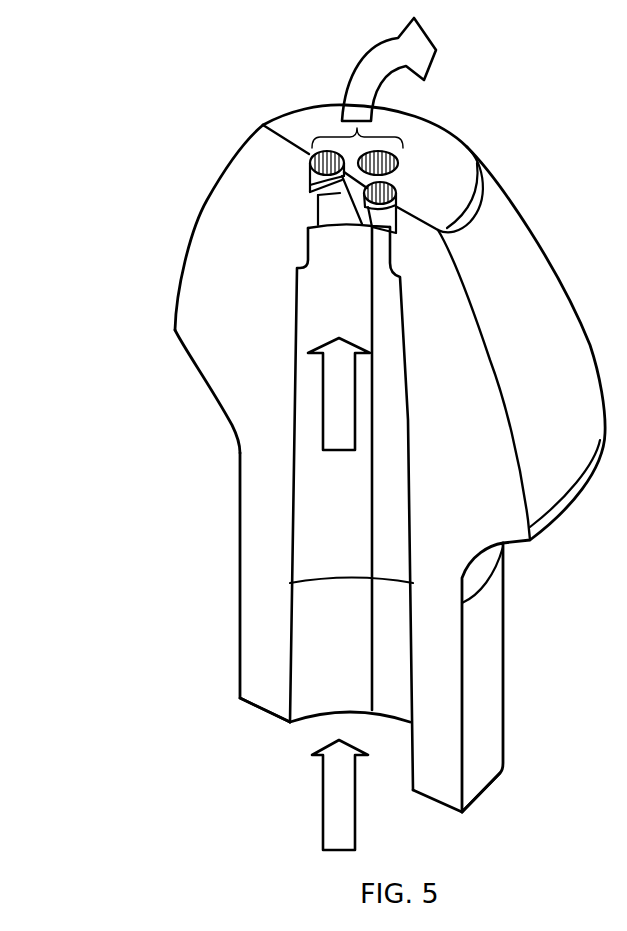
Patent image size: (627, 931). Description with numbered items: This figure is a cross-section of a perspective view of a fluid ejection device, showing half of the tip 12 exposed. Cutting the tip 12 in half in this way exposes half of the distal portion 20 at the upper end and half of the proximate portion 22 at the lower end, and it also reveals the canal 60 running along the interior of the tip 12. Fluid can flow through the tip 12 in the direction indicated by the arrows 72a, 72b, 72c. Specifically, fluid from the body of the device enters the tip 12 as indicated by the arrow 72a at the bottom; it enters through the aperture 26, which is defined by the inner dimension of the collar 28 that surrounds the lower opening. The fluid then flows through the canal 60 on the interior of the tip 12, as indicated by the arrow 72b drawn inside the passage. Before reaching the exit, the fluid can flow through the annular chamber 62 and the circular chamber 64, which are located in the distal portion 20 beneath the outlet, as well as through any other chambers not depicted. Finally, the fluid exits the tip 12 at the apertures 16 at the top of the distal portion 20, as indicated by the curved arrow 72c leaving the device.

The tip 12 is at (113, 69).
The apertures 16 is at (417, 143).
The distal portion 20 is at (148, 103).
The proximate portion 22 is at (195, 476).
The aperture 26 is at (391, 746).
The collar 28 is at (235, 668).
The canal 60 is at (312, 734).
The annular chamber 62 is at (293, 198).
The circular chamber 64 is at (290, 253).
The arrow 72a is at (355, 812).
The arrow 72b is at (323, 393).
The arrow 72c is at (360, 62).